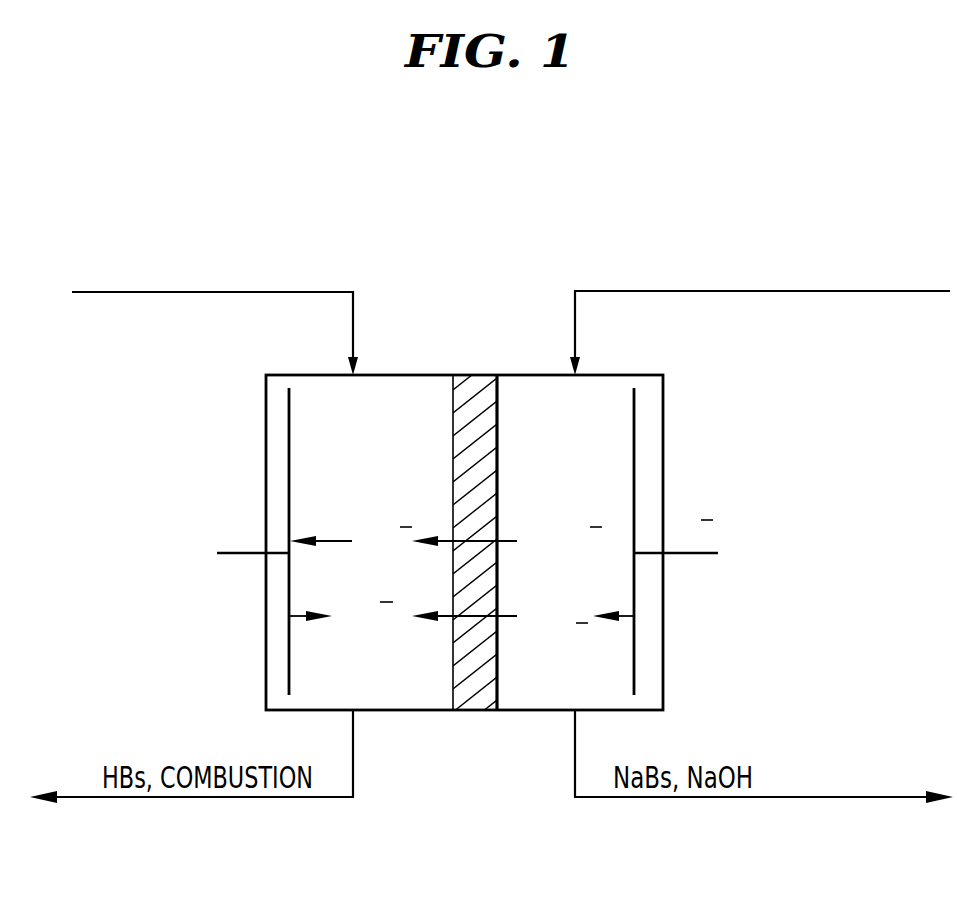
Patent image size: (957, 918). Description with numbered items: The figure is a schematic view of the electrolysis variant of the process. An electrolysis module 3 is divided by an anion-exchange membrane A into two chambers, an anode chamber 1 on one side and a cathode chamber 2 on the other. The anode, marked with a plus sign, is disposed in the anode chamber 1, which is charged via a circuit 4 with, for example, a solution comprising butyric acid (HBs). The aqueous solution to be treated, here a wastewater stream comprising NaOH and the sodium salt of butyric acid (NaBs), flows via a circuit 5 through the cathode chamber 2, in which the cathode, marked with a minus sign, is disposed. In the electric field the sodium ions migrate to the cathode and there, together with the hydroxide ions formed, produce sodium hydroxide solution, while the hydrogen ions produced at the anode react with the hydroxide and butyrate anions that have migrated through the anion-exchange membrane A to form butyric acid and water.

The anode chamber 1 is at (403, 541).
The cathode chamber 2 is at (580, 541).
The electrolysis module 3 is at (664, 442).
The circuit 4 is at (240, 292).
The circuit 5 is at (642, 290).
The anion-exchange membrane A is at (475, 534).